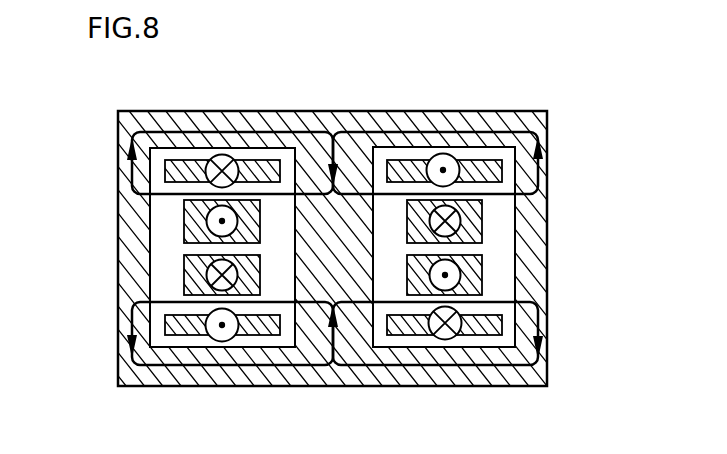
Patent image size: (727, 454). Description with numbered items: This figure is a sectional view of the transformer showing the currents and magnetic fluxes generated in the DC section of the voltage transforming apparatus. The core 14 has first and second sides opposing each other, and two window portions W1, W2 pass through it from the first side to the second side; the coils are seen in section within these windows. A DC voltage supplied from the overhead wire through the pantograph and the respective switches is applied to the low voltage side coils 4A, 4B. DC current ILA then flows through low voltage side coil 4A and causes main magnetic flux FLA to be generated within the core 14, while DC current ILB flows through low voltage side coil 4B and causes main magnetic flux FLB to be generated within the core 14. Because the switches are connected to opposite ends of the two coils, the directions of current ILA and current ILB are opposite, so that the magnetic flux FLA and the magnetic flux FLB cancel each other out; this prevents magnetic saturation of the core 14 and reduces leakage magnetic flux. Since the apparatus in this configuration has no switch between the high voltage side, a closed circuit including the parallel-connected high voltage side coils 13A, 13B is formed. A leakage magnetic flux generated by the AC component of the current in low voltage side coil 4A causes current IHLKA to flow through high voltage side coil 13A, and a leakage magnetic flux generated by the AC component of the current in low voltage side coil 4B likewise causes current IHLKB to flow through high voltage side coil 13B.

The core 14 is at (505, 118).
The low voltage side coil 4A is at (178, 162).
The low voltage side coil 4B is at (178, 328).
The DC current ILA is at (222, 154).
The DC current ILB is at (223, 342).
The main magnetic flux FLA is at (320, 134).
The main magnetic flux FLB is at (330, 354).
The high voltage side coil 13A is at (184, 230).
The high voltage side coil 13B is at (184, 277).
The current IHLKA is at (184, 204).
The current IHLKB is at (184, 296).
The window portion W1 is at (163, 252).
The window portion W2 is at (502, 249).